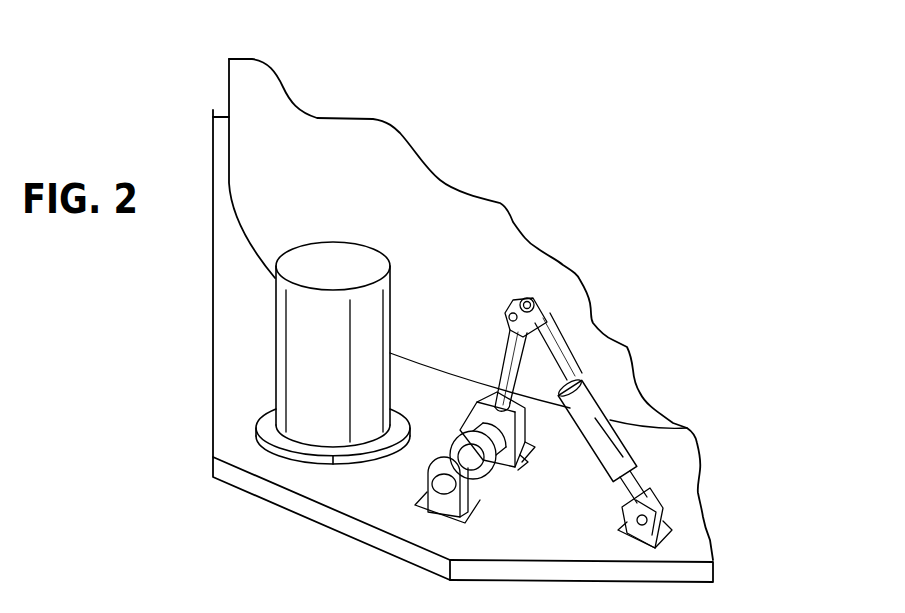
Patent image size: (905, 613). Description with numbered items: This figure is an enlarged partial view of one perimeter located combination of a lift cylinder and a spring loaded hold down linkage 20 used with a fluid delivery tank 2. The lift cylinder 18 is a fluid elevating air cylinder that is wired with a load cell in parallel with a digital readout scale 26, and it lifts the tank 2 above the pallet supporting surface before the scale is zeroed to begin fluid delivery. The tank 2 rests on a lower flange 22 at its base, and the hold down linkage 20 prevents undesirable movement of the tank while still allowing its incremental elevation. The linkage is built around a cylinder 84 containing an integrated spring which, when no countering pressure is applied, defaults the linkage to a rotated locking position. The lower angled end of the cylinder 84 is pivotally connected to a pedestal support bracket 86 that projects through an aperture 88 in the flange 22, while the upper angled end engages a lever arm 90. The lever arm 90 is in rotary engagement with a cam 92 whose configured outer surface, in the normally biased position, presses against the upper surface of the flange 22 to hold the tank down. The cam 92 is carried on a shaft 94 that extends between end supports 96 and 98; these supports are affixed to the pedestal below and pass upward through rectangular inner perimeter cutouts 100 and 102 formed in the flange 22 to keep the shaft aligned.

The tank 2 is at (325, 140).
The lift cylinder 18 is at (292, 233).
The spring loaded hold down linkage 20 is at (584, 346).
The lower flange 22 is at (240, 448).
The digital readout scale 26 is at (265, 415).
The cylinder 84 is at (600, 440).
The pedestal support bracket 86 is at (663, 525).
The aperture 88 is at (637, 537).
The lever arm 90 is at (505, 367).
The cam 92 is at (493, 487).
The shaft 94 is at (460, 460).
The end support 96 is at (443, 505).
The end support 98 is at (520, 460).
The rectangular inner perimeter cutout 100 is at (422, 499).
The rectangular inner perimeter cutout 102 is at (530, 463).